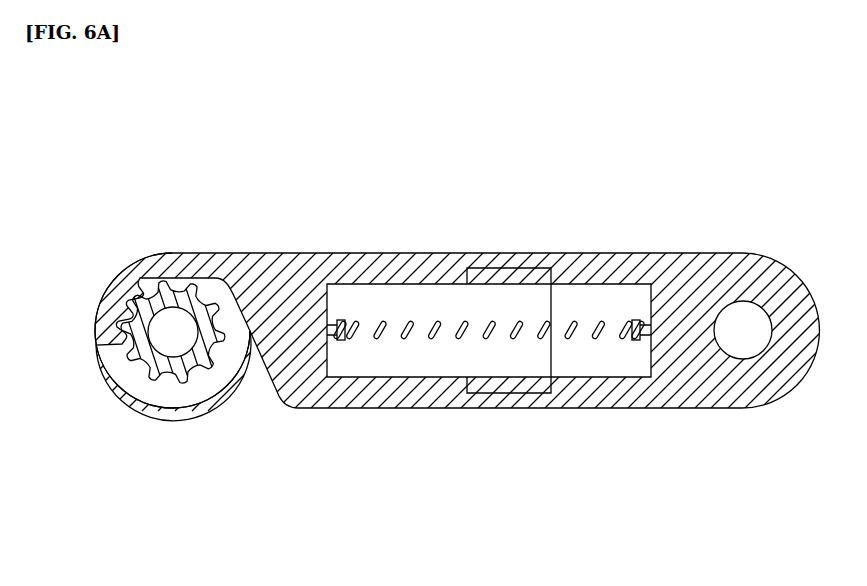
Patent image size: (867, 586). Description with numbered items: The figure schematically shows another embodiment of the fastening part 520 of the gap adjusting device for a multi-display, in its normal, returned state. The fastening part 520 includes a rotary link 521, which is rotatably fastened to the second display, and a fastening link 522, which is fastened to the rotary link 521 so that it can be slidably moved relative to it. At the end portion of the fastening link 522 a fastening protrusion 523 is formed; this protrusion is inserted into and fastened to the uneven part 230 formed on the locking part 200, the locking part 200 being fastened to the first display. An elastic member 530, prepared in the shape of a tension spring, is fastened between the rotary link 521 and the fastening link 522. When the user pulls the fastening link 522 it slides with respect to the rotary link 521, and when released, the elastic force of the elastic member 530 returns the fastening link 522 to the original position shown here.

The fastening part 520 is at (413, 240).
The rotary link 521 is at (653, 392).
The fastening link 522 is at (371, 394).
The elastic member 530 is at (461, 339).
The fastening protrusion 523 is at (123, 341).
The uneven part 230 is at (157, 384).
The locking part 200 is at (215, 410).